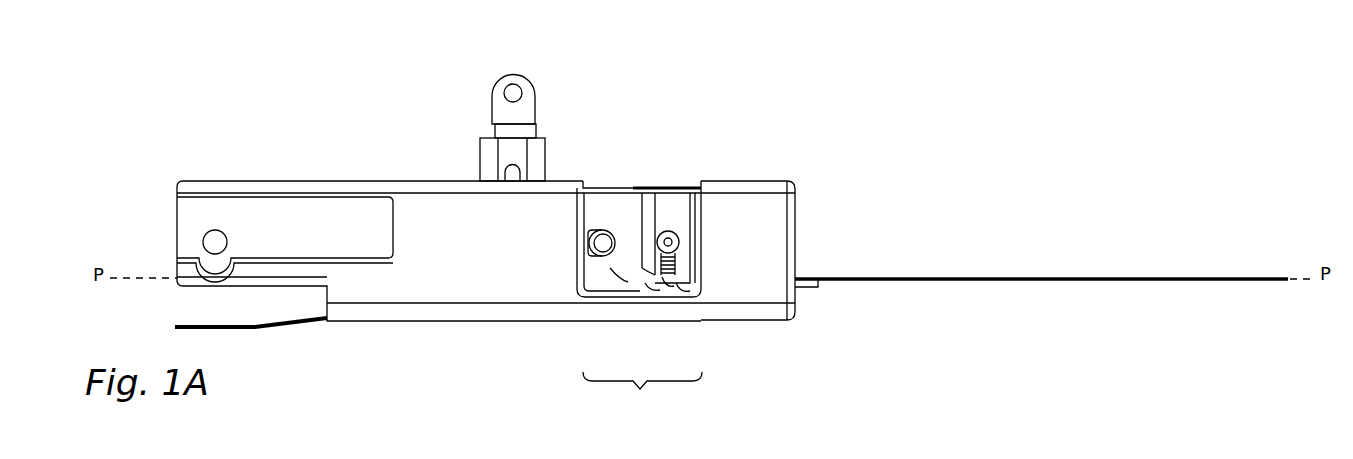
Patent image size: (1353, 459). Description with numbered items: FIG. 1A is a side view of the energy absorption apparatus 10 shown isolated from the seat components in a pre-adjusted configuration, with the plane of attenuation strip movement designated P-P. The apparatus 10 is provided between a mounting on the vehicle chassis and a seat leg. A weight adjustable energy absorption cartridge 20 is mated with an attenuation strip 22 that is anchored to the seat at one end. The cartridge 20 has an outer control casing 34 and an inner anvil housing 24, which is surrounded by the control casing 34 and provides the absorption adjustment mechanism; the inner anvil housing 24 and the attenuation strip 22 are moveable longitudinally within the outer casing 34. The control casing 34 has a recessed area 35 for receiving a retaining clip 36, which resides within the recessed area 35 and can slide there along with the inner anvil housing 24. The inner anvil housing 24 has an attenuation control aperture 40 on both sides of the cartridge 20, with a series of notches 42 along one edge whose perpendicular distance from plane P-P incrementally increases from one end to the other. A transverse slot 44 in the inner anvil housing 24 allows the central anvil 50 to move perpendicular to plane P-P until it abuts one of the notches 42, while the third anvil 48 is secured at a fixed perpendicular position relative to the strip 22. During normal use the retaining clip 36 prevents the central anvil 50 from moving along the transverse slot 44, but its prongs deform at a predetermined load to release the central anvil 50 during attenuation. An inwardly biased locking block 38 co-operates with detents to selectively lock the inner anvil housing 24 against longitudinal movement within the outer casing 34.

The energy absorption apparatus 10 is at (668, 89).
The weight adjustable energy absorption cartridge 20 is at (800, 178).
The attenuation strip 22 is at (258, 328).
The inner anvil housing 24 is at (648, 205).
The outer control casing 34 is at (775, 232).
The recessed area 35 is at (638, 390).
The retaining clip 36 is at (668, 200).
The locking block 38 is at (527, 148).
The attenuation control aperture 40 is at (600, 230).
The notches 42 is at (655, 280).
The transverse slot 44 is at (678, 285).
The third anvil 48 is at (633, 262).
The central anvil 50 is at (672, 238).